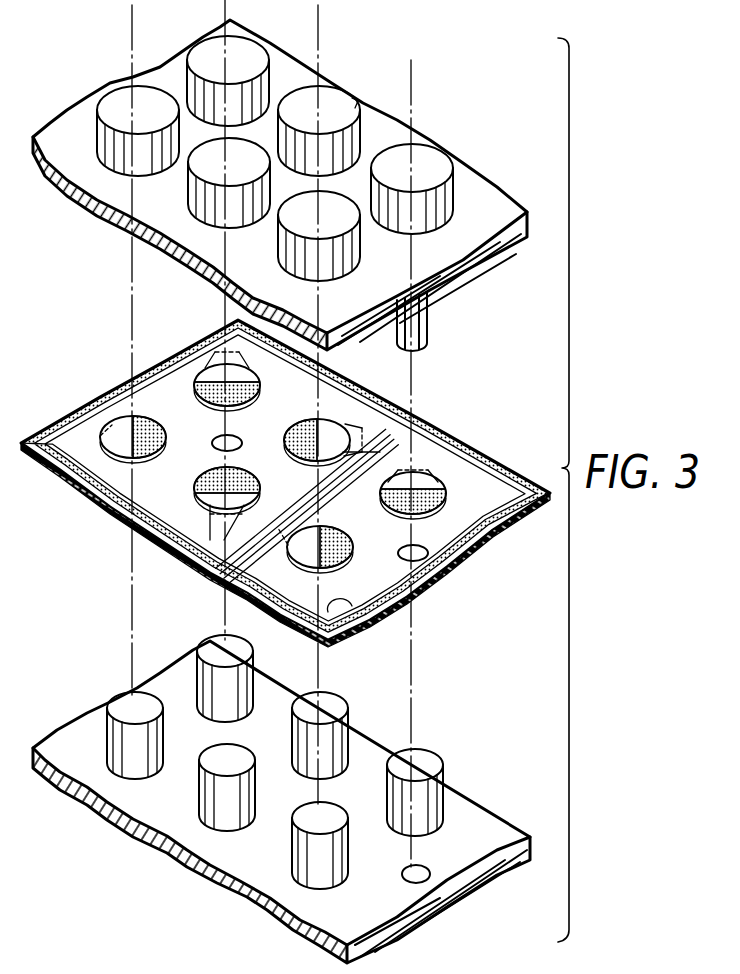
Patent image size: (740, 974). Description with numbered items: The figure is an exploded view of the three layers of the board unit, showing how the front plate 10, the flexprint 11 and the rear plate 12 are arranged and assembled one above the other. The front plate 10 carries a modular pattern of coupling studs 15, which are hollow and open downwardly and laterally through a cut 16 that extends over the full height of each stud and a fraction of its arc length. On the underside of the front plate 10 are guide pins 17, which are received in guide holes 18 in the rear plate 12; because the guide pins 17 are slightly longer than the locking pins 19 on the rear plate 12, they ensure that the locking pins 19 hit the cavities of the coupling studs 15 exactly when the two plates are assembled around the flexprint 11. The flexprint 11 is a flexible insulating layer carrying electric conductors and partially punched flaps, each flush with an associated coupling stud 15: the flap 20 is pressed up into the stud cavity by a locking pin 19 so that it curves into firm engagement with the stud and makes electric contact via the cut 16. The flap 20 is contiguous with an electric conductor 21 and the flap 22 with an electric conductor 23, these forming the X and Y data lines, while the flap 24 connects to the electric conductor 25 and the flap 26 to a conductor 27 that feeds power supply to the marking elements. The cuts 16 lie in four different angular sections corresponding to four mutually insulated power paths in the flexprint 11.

The front plate 10 is at (286, 178).
The flexprint 11 is at (285, 480).
The rear plate 12 is at (298, 799).
The coupling studs 15 is at (327, 97).
The cut 16 is at (367, 104).
The guide pins 17 is at (430, 322).
The guide holes 18 is at (428, 867).
The locking pins 19 is at (348, 720).
The flap 20 is at (332, 432).
The electric conductor 21 is at (419, 436).
The flap 22 is at (215, 370).
The electric conductor 23 is at (505, 463).
The flap 24 is at (243, 504).
The electric conductor 25 is at (353, 620).
The flap 26 is at (113, 445).
The conductor 27 is at (123, 385).